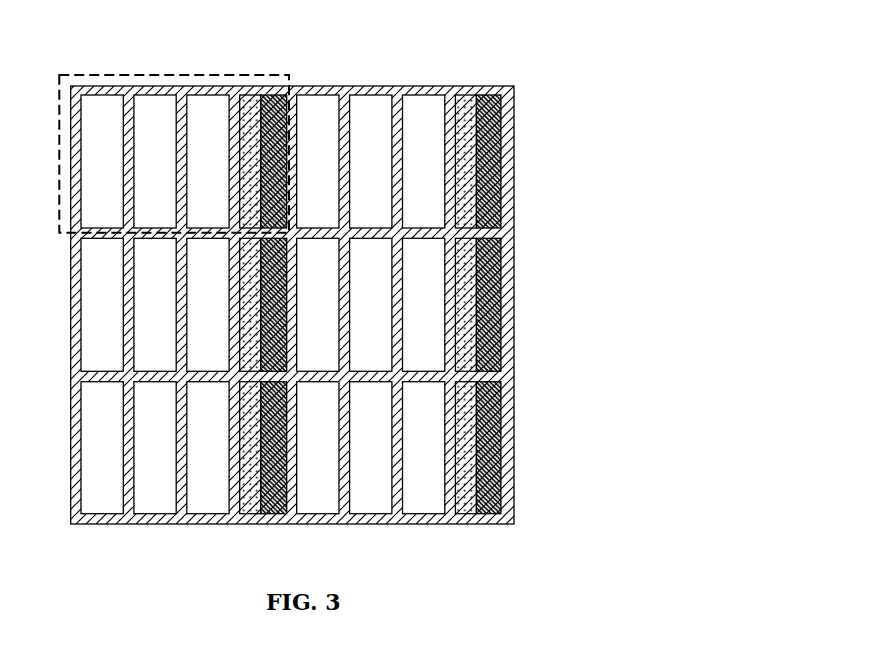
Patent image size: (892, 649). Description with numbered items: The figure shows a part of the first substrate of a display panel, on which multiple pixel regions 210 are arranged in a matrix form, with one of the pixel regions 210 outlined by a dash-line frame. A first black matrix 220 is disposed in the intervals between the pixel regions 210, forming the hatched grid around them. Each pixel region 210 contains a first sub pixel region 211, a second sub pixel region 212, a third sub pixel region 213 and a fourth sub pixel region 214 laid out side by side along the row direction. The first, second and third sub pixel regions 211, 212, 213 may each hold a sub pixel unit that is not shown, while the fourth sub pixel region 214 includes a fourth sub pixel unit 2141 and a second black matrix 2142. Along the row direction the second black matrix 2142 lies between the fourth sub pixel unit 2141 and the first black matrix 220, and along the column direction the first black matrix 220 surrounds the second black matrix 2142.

The pixel region 210 is at (83, 76).
The first sub pixel region 211 is at (87, 105).
The second sub pixel region 212 is at (148, 107).
The third sub pixel region 213 is at (205, 108).
The fourth sub pixel region 214 is at (329, 121).
The fourth sub pixel unit 2141 is at (247, 113).
The second black matrix 2142 is at (285, 97).
The first black matrix 220 is at (502, 93).